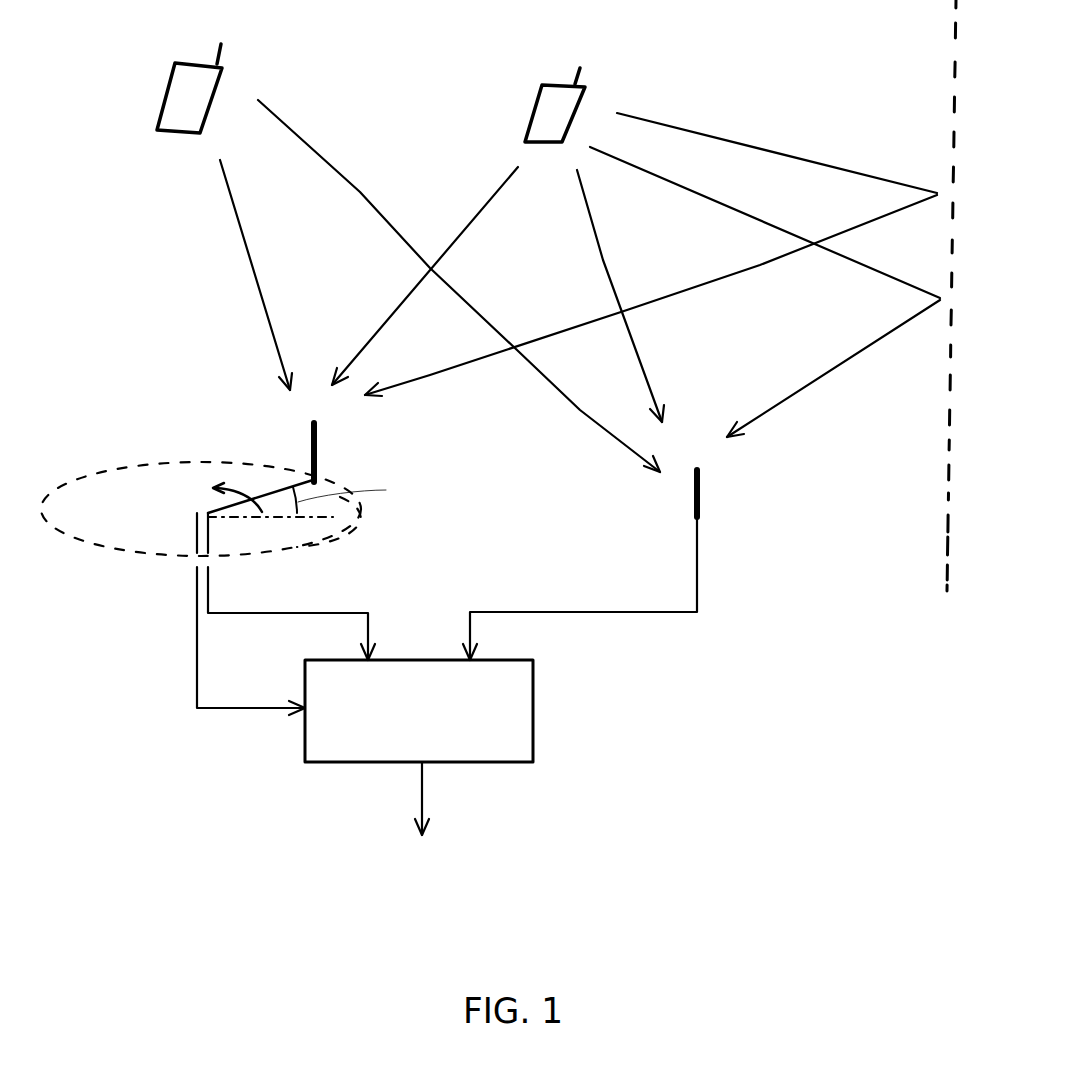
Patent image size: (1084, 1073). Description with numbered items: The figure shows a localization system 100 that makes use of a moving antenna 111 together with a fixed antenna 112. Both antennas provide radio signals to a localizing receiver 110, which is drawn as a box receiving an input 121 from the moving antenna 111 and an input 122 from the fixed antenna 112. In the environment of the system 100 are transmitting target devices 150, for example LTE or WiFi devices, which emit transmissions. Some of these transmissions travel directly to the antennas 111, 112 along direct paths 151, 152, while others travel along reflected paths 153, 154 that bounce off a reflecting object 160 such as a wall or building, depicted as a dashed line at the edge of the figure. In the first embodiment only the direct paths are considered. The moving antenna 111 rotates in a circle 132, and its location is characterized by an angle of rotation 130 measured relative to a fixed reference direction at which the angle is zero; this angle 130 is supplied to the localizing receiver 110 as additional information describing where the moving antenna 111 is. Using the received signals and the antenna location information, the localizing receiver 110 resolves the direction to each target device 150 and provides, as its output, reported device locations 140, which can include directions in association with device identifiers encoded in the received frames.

The localization system 100 is at (715, 656).
The localizing receiver 110 is at (534, 710).
The moving antenna 111 is at (323, 462).
The fixed antenna 112 is at (706, 497).
The first received signal q1 121 is at (370, 618).
The second received signal q2 122 is at (472, 630).
The angle of rotation 130 is at (242, 714).
The circle 132 is at (130, 468).
The device locations 140 is at (606, 878).
The target device 150 is at (223, 72).
The direct path 151 is at (240, 217).
The direct path 152 is at (347, 177).
The reflected path 153 is at (713, 136).
The reflected path 154 is at (730, 207).
The reflecting object 160 is at (954, 30).